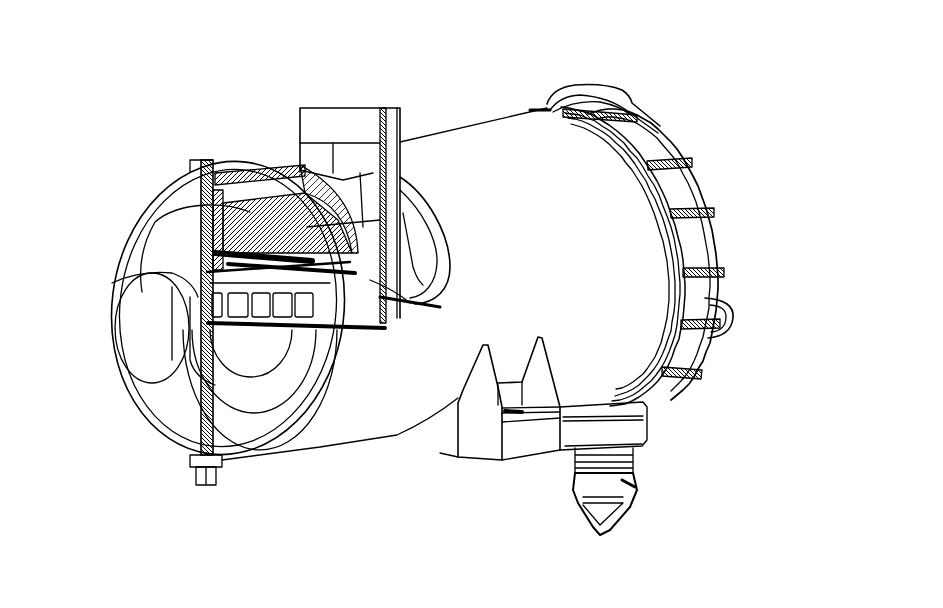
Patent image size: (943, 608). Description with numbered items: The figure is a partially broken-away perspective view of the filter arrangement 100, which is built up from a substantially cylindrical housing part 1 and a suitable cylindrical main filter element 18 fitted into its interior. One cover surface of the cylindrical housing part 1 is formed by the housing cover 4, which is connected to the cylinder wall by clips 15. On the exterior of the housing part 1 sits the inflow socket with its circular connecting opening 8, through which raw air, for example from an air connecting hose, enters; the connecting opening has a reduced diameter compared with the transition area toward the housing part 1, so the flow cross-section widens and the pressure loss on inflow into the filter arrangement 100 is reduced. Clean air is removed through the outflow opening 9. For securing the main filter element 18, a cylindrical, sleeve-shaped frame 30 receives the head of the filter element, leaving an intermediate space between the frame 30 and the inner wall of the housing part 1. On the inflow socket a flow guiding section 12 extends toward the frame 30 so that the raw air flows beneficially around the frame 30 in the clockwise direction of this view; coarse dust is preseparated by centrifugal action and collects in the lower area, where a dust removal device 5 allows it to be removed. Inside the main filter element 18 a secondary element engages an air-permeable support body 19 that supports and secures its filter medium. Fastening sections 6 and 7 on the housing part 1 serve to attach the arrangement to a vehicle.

The filter arrangement 100 is at (104, 60).
The housing part 1 is at (467, 145).
The housing cover 4 is at (690, 183).
The dust removal device 5 is at (633, 440).
The fastening section 6 is at (493, 453).
The fastening section 7 is at (220, 487).
The connecting opening 8 is at (345, 122).
The outflow opening 9 is at (133, 342).
The flow guiding section 12 is at (300, 187).
The clips 15 is at (620, 93).
The filter element 18 is at (245, 225).
The support body 19 is at (173, 298).
The frame 30 is at (430, 249).